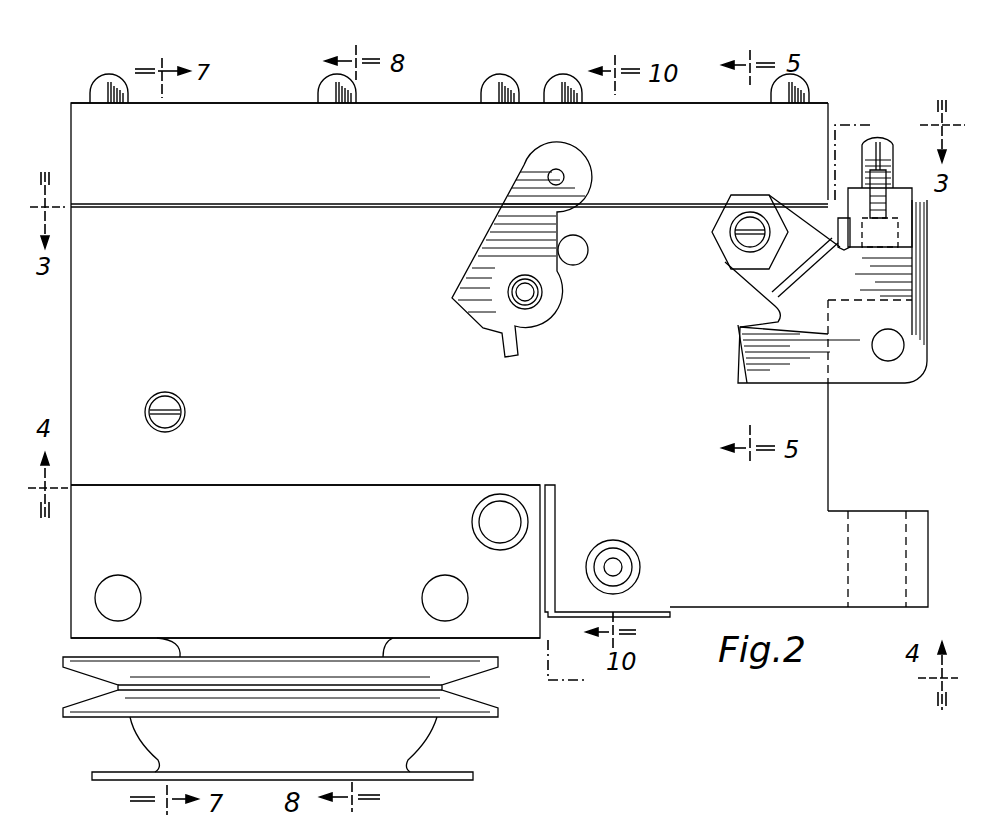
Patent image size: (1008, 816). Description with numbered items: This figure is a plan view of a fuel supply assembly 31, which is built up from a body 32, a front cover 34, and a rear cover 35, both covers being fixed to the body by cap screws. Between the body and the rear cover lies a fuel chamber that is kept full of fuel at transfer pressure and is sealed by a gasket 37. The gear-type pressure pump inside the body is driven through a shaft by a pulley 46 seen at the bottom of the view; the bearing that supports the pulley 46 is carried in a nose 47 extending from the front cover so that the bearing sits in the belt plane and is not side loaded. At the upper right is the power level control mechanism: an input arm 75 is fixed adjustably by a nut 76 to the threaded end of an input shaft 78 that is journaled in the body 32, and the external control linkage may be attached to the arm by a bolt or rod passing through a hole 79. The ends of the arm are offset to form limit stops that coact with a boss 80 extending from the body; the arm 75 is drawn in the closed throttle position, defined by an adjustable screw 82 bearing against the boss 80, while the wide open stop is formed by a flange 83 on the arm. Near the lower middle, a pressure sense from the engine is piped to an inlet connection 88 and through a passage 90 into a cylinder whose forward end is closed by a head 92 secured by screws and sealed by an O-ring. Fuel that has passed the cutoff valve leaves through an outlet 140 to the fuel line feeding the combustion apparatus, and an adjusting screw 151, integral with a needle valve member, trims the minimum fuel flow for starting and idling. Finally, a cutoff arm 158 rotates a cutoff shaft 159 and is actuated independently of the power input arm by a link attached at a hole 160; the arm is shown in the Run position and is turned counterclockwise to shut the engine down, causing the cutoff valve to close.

The fuel supply assembly 31 is at (263, 64).
The body 32 is at (71, 333).
The front cover 34 is at (71, 590).
The rear cover 35 is at (420, 103).
The gasket 37 is at (282, 204).
The pulley 46 is at (304, 681).
The nose 47 is at (180, 654).
The input arm 75 is at (805, 260).
The nut 76 is at (712, 232).
The input shaft 78 is at (751, 228).
The hole 79 is at (898, 352).
The boss 80 is at (838, 236).
The adjustable screw 82 is at (882, 142).
The flange 83 is at (740, 355).
The inlet connection 88 is at (622, 570).
The passage 90 is at (616, 565).
The head 92 is at (660, 610).
The outlet 140 is at (500, 512).
The adjusting screw 151 is at (180, 402).
The cutoff arm 158 is at (498, 232).
The cutoff shaft 159 is at (530, 295).
The hole 160 is at (562, 174).